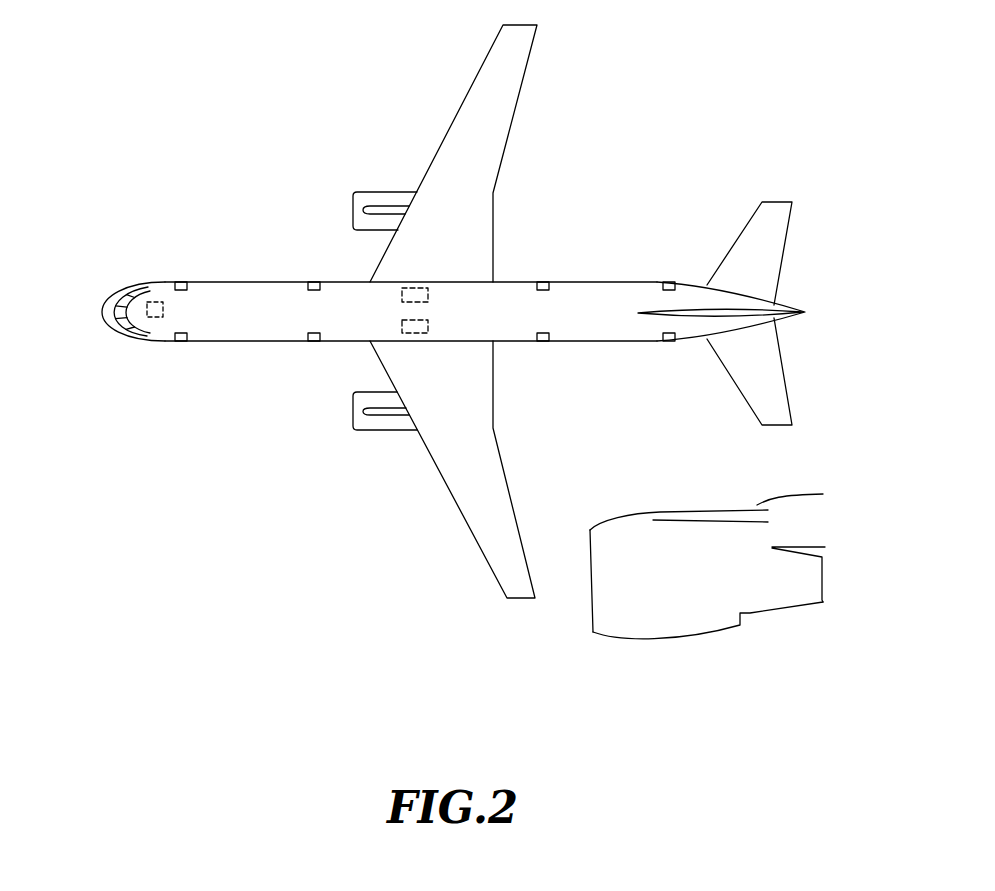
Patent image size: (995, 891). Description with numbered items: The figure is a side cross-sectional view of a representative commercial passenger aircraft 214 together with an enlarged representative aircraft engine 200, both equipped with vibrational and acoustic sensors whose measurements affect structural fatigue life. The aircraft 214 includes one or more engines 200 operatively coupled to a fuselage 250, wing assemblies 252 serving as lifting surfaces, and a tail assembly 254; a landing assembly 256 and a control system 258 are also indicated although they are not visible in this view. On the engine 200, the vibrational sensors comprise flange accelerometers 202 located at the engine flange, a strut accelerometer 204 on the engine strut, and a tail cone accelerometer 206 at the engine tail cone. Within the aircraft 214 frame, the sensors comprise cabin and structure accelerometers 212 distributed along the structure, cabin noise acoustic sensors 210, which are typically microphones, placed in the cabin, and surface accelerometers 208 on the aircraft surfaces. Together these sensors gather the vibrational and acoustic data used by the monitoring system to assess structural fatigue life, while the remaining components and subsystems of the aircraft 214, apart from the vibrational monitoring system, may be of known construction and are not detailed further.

The aircraft engine 200 is at (573, 457).
The flange accelerometers 202 is at (662, 530).
The strut accelerometer 204 is at (782, 540).
The tail cone accelerometer 206 is at (802, 570).
The surface accelerometers 208 is at (693, 322).
The cabin noise acoustic sensors 210 is at (380, 302).
The cabin and structure accelerometers 212 is at (125, 328).
The aircraft 214 is at (182, 552).
The fuselage 250 is at (529, 262).
The wing assemblies 252 is at (540, 625).
The tail assembly 254 is at (806, 214).
The landing assembly 256 is at (160, 303).
The control system 258 is at (92, 282).